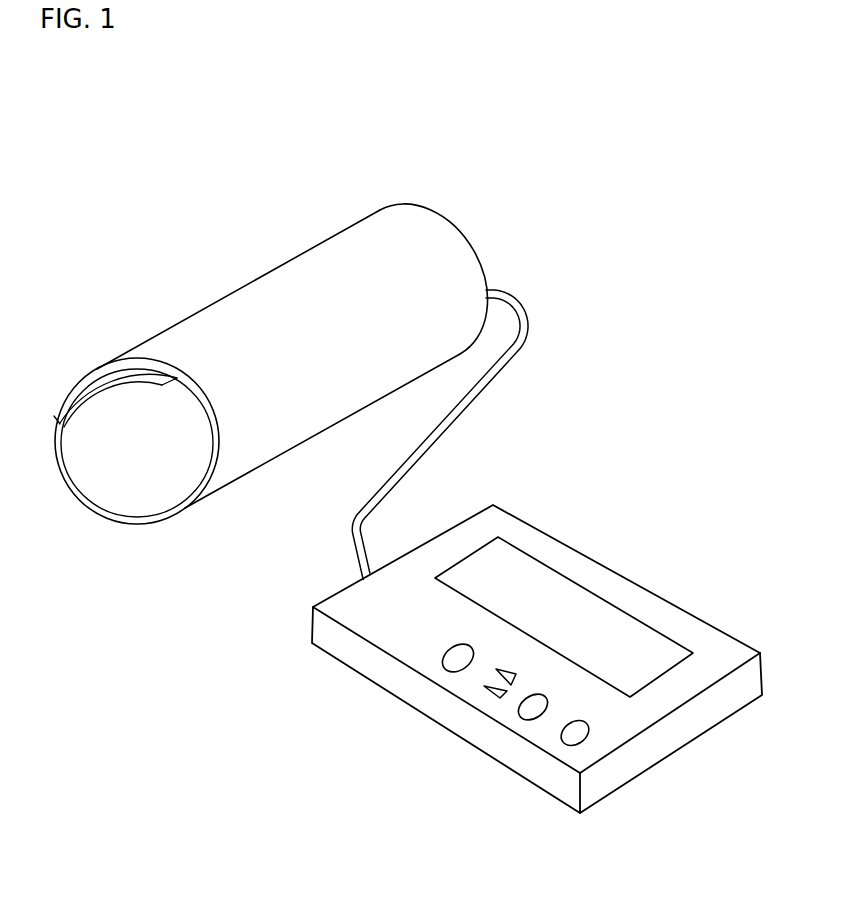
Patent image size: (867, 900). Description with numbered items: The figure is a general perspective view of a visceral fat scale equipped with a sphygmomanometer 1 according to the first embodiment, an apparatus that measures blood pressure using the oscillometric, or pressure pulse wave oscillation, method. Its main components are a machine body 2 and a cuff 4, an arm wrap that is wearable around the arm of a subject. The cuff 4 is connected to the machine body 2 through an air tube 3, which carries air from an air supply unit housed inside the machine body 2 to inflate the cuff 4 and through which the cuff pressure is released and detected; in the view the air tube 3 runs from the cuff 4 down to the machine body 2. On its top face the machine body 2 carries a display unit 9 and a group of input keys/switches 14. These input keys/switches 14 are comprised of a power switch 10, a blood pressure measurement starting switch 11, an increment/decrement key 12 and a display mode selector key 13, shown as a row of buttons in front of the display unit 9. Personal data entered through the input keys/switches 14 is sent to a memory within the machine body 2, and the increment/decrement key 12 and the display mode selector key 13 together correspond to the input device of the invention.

The visceral fat scale equipped with a sphygmomanometer 1 is at (556, 280).
The machine body 2 is at (556, 535).
The air tube 3 is at (495, 380).
The cuff 4 is at (312, 255).
The display unit 9 is at (627, 623).
The power switch 10 is at (570, 745).
The blood pressure measurement starting switch 11 is at (527, 718).
The increment/decrement key 12 is at (485, 695).
The display mode selector key 13 is at (450, 670).
The input keys/switches 14 is at (372, 763).